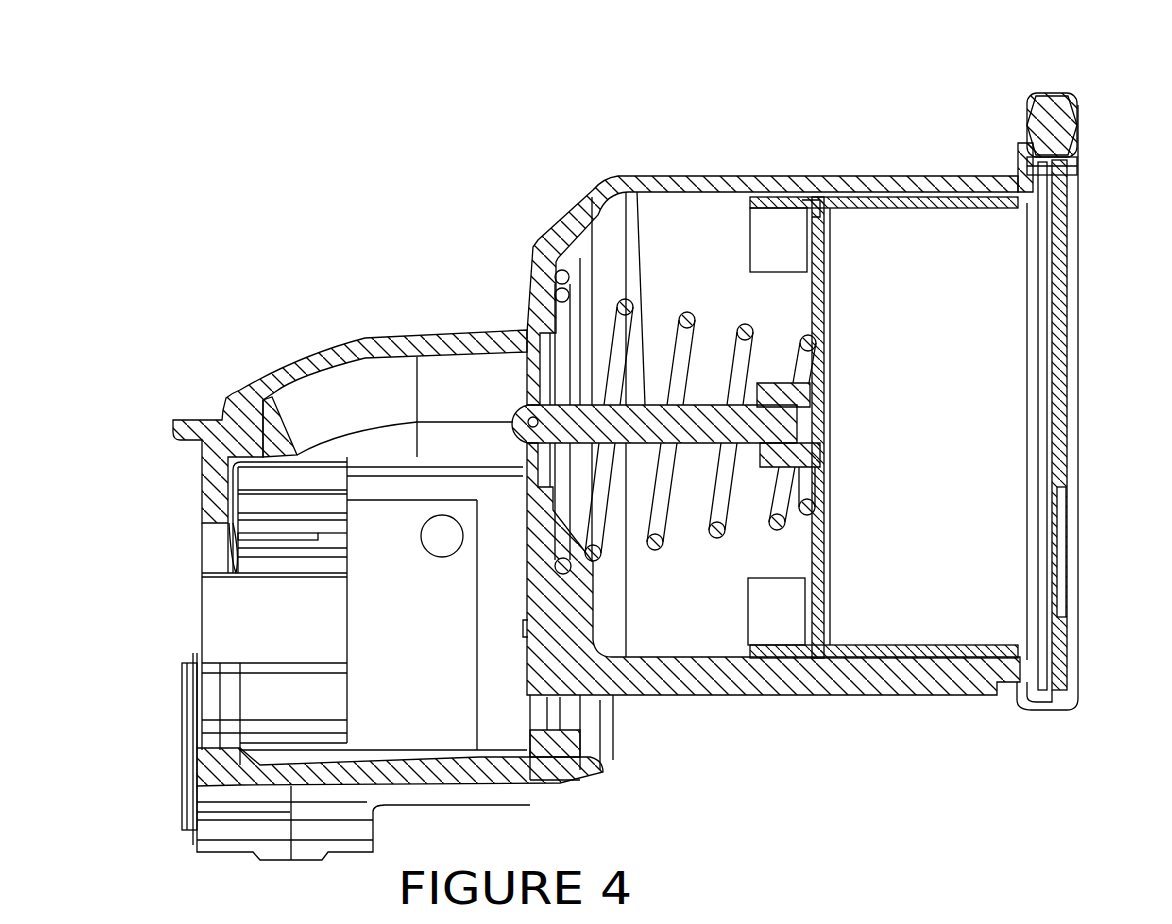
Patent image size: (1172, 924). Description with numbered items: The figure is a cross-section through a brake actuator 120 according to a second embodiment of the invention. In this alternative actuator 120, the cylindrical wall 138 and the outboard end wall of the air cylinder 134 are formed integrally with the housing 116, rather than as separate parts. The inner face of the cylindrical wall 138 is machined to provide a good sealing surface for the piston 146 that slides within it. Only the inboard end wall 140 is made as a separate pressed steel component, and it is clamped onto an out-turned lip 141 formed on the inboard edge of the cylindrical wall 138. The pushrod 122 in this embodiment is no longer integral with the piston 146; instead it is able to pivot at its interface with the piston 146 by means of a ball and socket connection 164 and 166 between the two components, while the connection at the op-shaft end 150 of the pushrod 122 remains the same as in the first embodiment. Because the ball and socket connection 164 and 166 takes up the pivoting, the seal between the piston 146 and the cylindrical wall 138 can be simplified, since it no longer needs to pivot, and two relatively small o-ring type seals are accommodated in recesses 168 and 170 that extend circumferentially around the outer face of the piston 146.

The housing 116 is at (602, 772).
The actuator 120 is at (946, 116).
The pushrod 122 is at (636, 176).
The air cylinder 134 is at (527, 268).
The cylindrical wall 138 is at (918, 680).
The inboard end wall 140 is at (1078, 417).
The out-turned lip 141 is at (1030, 708).
The piston 146 is at (810, 198).
The op-shaft end 150 is at (532, 418).
The ball and socket connection 164 is at (760, 445).
The ball and socket connection 166 is at (800, 410).
The recess 168 is at (1012, 192).
The recess 170 is at (1050, 103).